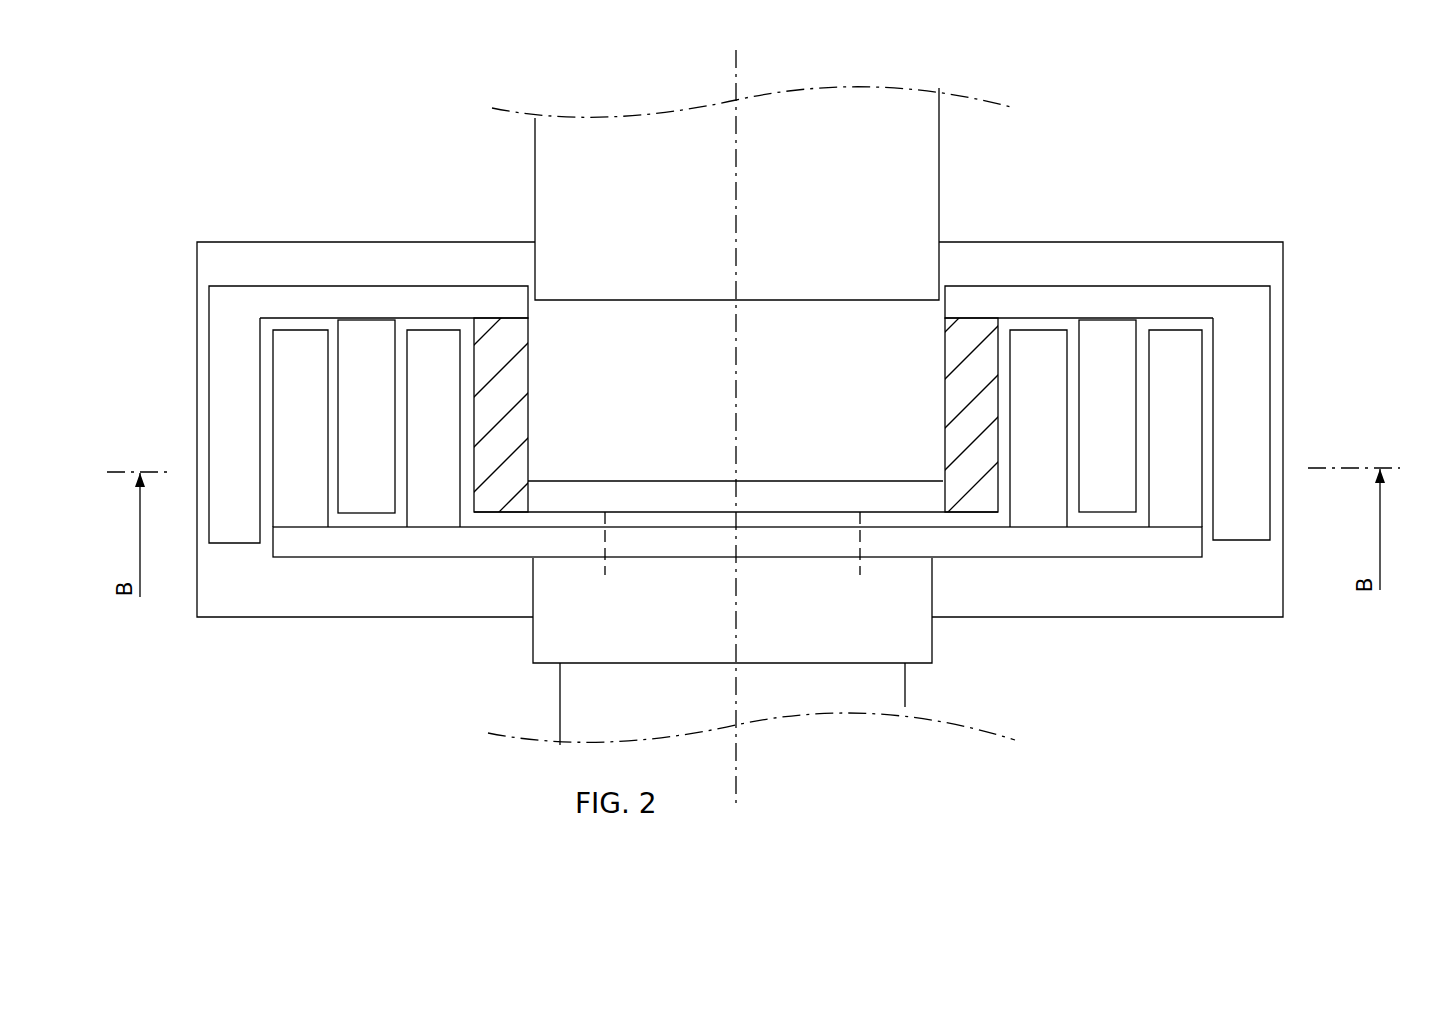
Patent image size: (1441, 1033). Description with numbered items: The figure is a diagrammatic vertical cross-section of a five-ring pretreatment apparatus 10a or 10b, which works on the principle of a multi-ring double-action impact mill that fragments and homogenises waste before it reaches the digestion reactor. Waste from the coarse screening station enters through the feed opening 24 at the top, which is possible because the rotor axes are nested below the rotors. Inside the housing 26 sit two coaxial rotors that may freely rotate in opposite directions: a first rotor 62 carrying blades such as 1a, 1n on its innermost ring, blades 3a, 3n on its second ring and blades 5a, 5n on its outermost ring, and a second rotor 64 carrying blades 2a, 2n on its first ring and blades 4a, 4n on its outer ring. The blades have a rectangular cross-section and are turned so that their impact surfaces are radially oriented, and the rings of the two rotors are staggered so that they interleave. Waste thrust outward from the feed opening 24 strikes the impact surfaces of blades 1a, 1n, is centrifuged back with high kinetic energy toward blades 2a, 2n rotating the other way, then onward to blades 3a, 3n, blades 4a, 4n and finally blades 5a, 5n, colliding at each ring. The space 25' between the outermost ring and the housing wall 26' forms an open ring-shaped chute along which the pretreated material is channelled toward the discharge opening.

The feed opening 24 is at (798, 212).
The pretreatment apparatus 10a is at (1045, 213).
The pretreatment apparatus 10b is at (805, 361).
The housing 26 is at (1174, 309).
The space 25' is at (1342, 408).
The housing wall 26' is at (1172, 561).
The first rotor 62 is at (415, 297).
The blade 5a is at (220, 402).
The blade 5n is at (1253, 337).
The second rotor 64 is at (358, 547).
The blade 4a is at (288, 357).
The blade 4n is at (1177, 353).
The blade 3a is at (365, 333).
The blade 3n is at (1117, 335).
The blade 2a is at (438, 493).
The blade 2n is at (1027, 408).
The blade 1a is at (510, 427).
The blade 1n is at (975, 341).